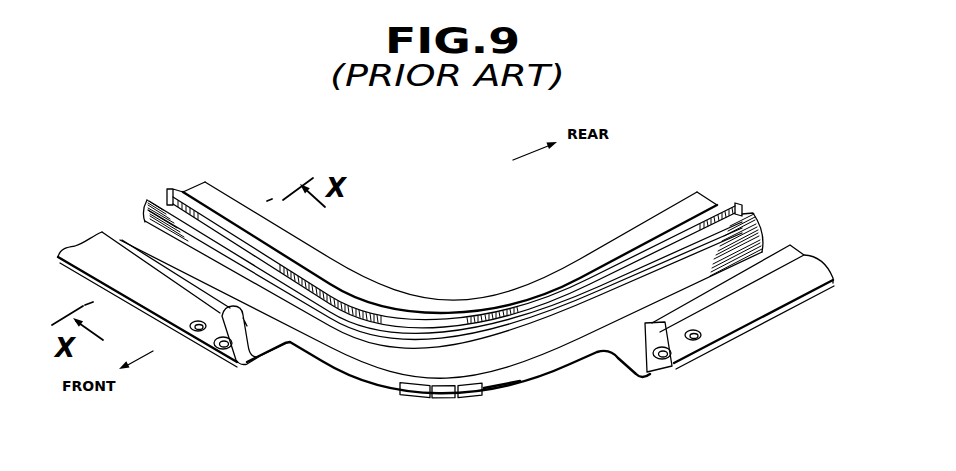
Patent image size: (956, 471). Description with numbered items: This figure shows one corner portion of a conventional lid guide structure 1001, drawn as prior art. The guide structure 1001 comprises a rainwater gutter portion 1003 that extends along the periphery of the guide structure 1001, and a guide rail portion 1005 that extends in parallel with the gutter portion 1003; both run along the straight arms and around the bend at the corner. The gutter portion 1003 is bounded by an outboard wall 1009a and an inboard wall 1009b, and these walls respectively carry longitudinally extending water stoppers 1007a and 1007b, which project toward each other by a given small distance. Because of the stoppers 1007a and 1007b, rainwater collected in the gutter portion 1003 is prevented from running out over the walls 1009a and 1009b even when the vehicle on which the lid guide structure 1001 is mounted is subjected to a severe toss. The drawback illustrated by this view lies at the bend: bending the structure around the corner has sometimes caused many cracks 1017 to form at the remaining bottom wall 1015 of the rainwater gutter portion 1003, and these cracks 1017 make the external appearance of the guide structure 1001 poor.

The lid guide structure 1001 is at (690, 186).
The rainwater gutter portion 1003 is at (769, 244).
The guide rail portion 1005 is at (746, 204).
The water stopper 1007a is at (218, 313).
The water stopper 1007b is at (382, 343).
The outboard wall 1009a is at (257, 348).
The inboard wall 1009b is at (568, 334).
The bottom wall 1015 is at (511, 386).
The cracks 1017 is at (455, 397).